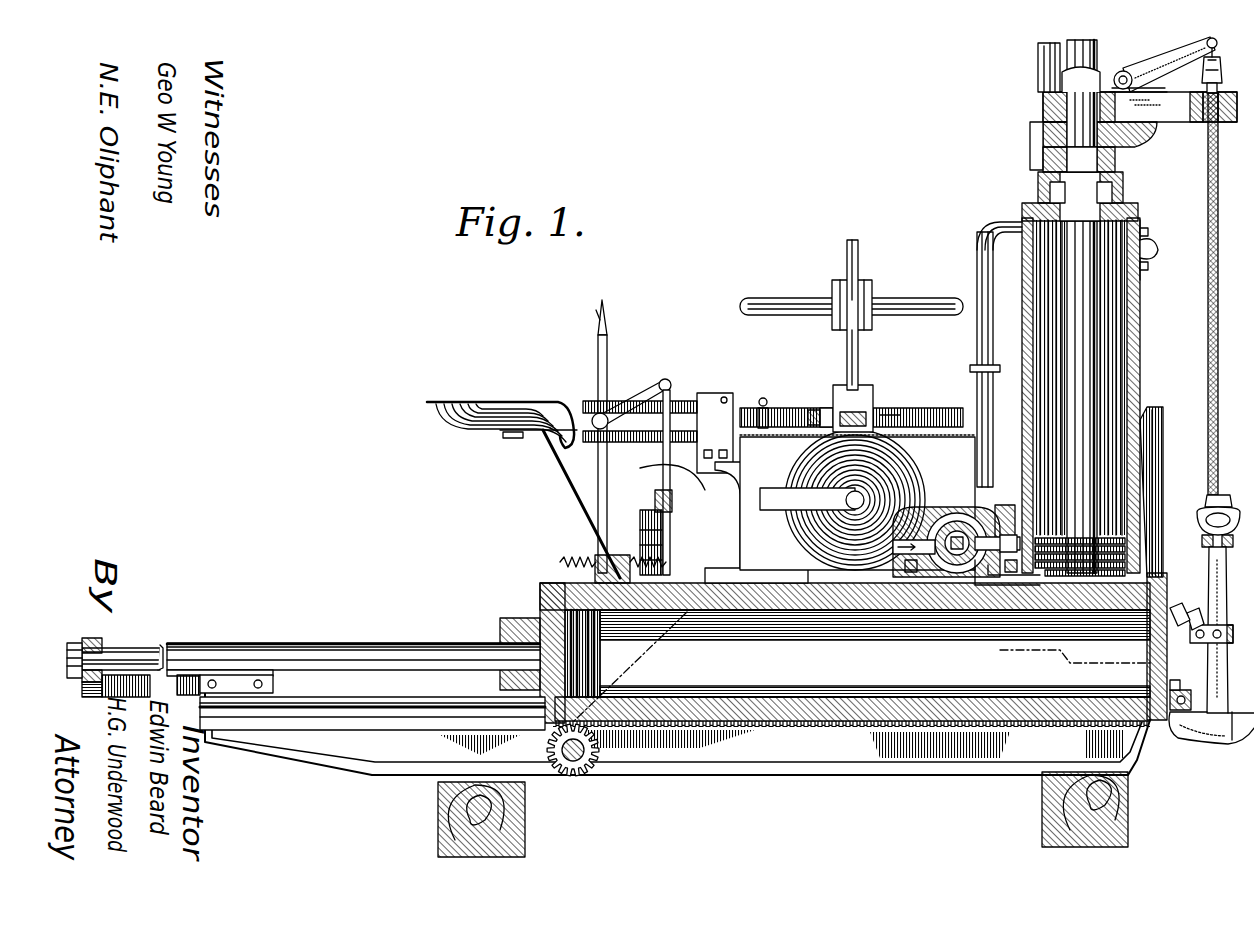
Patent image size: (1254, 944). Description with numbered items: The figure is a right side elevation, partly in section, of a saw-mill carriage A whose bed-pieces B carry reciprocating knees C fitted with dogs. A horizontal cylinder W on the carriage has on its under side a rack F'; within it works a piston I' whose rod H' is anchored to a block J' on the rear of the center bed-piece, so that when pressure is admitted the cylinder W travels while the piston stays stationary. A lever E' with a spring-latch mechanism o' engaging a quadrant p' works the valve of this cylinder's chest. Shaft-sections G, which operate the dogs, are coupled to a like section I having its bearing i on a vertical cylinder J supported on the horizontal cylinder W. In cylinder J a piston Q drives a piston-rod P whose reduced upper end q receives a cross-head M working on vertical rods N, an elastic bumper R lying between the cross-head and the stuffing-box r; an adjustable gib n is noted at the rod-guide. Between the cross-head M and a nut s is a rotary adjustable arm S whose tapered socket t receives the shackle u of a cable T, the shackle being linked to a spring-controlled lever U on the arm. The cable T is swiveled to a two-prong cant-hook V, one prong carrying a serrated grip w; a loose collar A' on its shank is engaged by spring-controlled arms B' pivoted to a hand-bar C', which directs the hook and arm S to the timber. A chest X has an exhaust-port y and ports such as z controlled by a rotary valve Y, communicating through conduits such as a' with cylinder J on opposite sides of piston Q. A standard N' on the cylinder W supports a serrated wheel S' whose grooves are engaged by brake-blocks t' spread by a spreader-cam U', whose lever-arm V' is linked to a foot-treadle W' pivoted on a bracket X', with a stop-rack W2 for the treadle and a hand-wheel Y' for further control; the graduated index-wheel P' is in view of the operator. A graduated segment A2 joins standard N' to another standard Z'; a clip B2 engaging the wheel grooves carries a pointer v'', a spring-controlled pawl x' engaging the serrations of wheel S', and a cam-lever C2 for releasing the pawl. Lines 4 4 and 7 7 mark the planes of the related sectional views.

The horizontal cylinder W is at (861, 666).
The piston I' is at (649, 545).
The rack F' is at (677, 734).
The bed-pieces B is at (750, 792).
The saw-mill carriage A is at (783, 814).
The shaft-sections G is at (548, 748).
The adjustable gib n is at (584, 752).
The section line 7 7 is at (575, 787).
The piston-rod H' is at (303, 655).
The block J' is at (341, 676).
The spreader-cam U' is at (508, 432).
The spring-latch mechanism o' is at (589, 330).
The valve-lever E' is at (615, 454).
The lever-arm V' is at (640, 398).
The stop-rack W2 is at (670, 520).
The foot-treadle W' is at (651, 501).
The bracket X' is at (639, 542).
The quadrant p' is at (604, 507).
The shackle u is at (700, 470).
The brake-blocks t' is at (760, 428).
The standard N' is at (756, 522).
The standard Z' is at (857, 503).
The index-wheel P' is at (861, 500).
The rotary adjustable arm S is at (998, 301).
The graduated segment A2 is at (955, 440).
The serrated wheel S' is at (851, 405).
The clip B2 is at (826, 408).
The spring-controlled pawl x' is at (905, 465).
The cam-lever C2 is at (866, 385).
The pointer v'' is at (895, 401).
The hand-wheel Y' is at (851, 308).
The cross-head M is at (858, 370).
The section line 4 4 is at (856, 255).
The chest X is at (946, 531).
The rotary valve Y is at (957, 520).
The exhaust-port y is at (1010, 537).
The port z is at (972, 576).
The conduit a' is at (996, 354).
The vertical cylinder J is at (1089, 395).
The piston-rod P is at (1080, 377).
The reduced upper end q is at (1088, 75).
The nut s is at (1081, 79).
The piston Q is at (1105, 538).
The knees C is at (1162, 492).
The stuffing-box r is at (1123, 180).
The elastic bumper R is at (1115, 160).
The vertical rods N is at (1037, 67).
The spring-controlled lever U is at (1163, 64).
The serrated grip w is at (1222, 60).
The tapered socket t is at (1221, 80).
The cable T is at (1218, 180).
The bearing i is at (1158, 248).
The shaft-section I is at (1152, 250).
The cant-hook V is at (1211, 619).
The loose collar A' is at (1207, 643).
The spring-controlled arms B' is at (1195, 606).
The hand-bar C' is at (1180, 603).